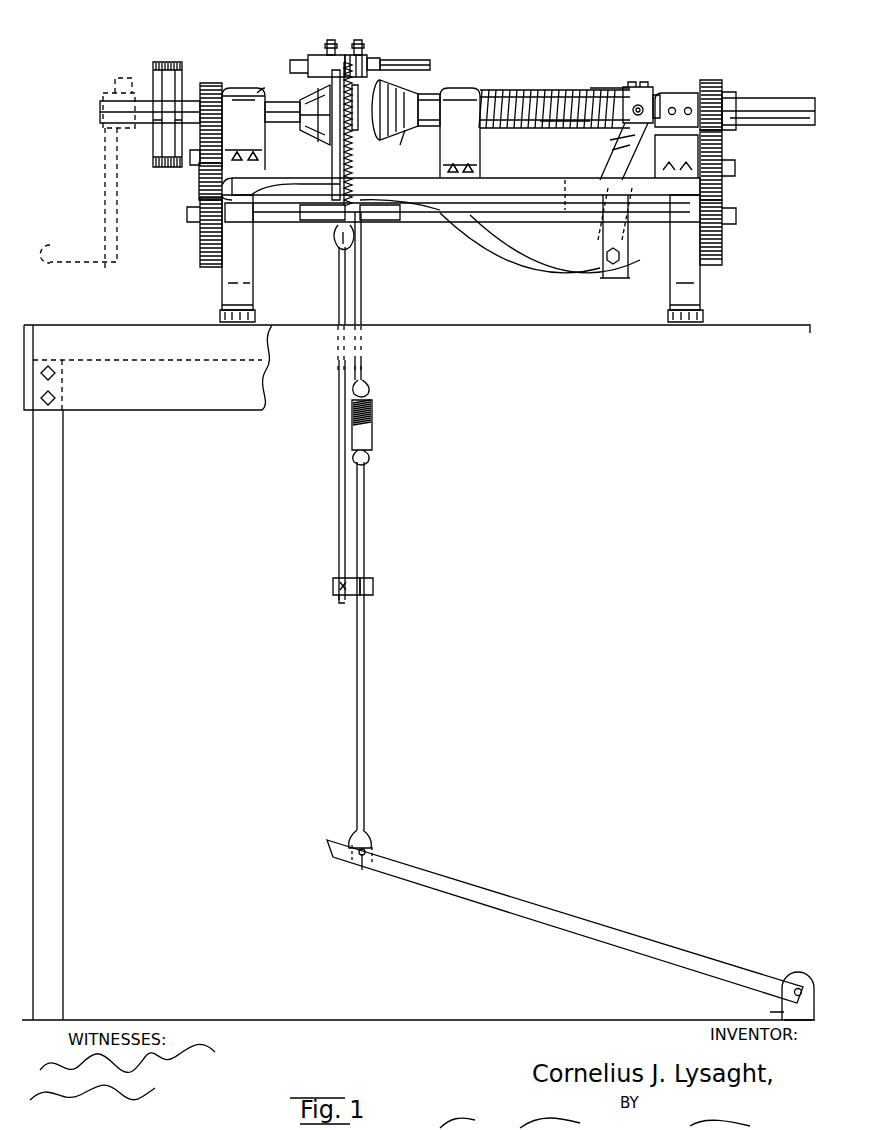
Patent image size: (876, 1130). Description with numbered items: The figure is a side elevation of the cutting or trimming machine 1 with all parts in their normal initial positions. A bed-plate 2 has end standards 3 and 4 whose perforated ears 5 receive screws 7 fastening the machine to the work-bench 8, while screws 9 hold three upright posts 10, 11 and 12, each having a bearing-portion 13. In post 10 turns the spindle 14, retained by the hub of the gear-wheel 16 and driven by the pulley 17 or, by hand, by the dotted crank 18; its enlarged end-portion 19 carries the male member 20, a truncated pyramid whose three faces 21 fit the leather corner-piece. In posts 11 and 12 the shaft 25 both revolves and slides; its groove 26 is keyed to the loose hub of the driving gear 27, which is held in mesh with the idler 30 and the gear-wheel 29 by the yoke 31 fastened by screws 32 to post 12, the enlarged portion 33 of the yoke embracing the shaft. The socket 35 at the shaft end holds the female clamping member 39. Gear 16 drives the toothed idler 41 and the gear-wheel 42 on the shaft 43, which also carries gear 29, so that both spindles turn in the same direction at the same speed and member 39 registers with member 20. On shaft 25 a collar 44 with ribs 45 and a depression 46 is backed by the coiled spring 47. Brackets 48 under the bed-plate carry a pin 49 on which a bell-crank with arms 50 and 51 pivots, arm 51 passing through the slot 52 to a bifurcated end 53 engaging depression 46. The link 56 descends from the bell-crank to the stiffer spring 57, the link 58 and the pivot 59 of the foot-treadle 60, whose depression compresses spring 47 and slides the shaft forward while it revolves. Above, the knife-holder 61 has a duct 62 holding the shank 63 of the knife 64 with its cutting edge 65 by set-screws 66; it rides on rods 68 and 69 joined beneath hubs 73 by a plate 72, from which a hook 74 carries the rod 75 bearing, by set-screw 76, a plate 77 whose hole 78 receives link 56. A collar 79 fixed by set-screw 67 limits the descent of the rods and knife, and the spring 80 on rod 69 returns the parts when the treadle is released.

The cutting or trimming machine 1 is at (243, 54).
The bed-plate 2 is at (503, 180).
The support or standard 3 is at (235, 270).
The support or standard 4 is at (700, 284).
The perforated ears or lugs 5 is at (222, 318).
The screws 7 is at (248, 310).
The table or work-bench 8 is at (520, 345).
The screws 9 is at (226, 140).
The support or standard 10 is at (198, 162).
The support or standard 11 is at (418, 128).
The support or standard 12 is at (612, 150).
The bearing-portion 13 is at (237, 100).
The spindle or shaft 14 is at (100, 112).
The gear-wheel 16 is at (209, 84).
The pulley 17 is at (166, 68).
The crank 18 is at (103, 205).
The enlarged end-portion 19 is at (272, 97).
The master or male member 20 is at (300, 102).
The angularly disposed sides or faces 21 is at (310, 128).
The shaft or spindle 25 is at (560, 128).
The longitudinally extending slot or groove 26 is at (790, 122).
The driving gear 27 is at (718, 86).
The gear-wheel 29 is at (724, 240).
The idler 30 is at (725, 186).
The yoke or strap 31 is at (685, 95).
The pins or screws 32 is at (680, 118).
The enlarged portion 33 is at (735, 96).
The socket or receiving portion 35 is at (430, 92).
The female corner-piece clamping member 39 is at (402, 140).
The toothed idler 41 is at (199, 187).
The gear-wheel 42 is at (200, 240).
The shaft 43 is at (268, 222).
The sleeve or collar 44 is at (656, 95).
The annular ribs 45 is at (630, 90).
The annular depression 46 is at (638, 82).
The coiled spring 47 is at (515, 90).
The brackets 48 is at (598, 265).
The pin or bolt 49 is at (610, 268).
The forwardly extending arm or member 50 is at (520, 255).
The upwardly projecting arm or member 51 is at (614, 138).
The slot or elongated opening 52 is at (568, 180).
The yoke-shaped or bifurcated end-member 53 is at (605, 92).
The link or rod 56 is at (364, 277).
The coiled spring 57 is at (374, 420).
The link or rod 58 is at (367, 532).
The pivot 59 is at (362, 872).
The foot-treadle 60 is at (508, 893).
The block or knife-holder 61 is at (331, 40).
The laterally extending duct 62 is at (372, 60).
The shank 63 is at (420, 60).
The knife or cutter 64 is at (320, 62).
The sharp cutting edge 65 is at (308, 68).
The set-screws 66 is at (358, 40).
The set-screw 67 is at (318, 140).
The rod 68 is at (243, 200).
The rod 69 is at (352, 92).
The bar or plate 72 is at (362, 222).
The hubs 73 is at (298, 216).
The ring or hook 74 is at (338, 248).
The rod or link 75 is at (339, 302).
The set-screw 76 is at (333, 587).
The bar or plate 77 is at (354, 606).
The opening or hole 78 is at (375, 585).
The collar 79 is at (334, 150).
The coiled spring 80 is at (354, 135).